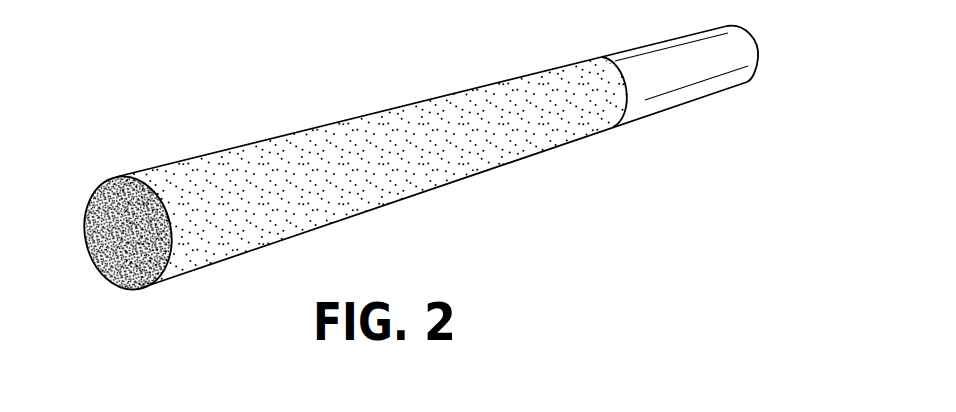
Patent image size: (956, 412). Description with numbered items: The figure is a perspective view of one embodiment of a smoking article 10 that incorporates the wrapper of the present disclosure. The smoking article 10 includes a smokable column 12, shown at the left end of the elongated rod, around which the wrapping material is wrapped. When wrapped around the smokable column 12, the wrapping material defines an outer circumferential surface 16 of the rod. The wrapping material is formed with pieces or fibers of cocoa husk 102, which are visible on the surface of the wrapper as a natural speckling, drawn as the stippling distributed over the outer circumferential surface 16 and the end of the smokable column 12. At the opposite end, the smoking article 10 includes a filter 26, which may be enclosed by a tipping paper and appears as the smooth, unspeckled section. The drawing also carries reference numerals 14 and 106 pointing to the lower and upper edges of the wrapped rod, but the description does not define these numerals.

The smoking article 10 is at (403, 175).
The smokable column 12 is at (104, 268).
The wrapper outer surface 14 is at (413, 198).
The outer circumferential surface 16 is at (350, 181).
The filter 26 is at (687, 94).
The pieces or fibers of cocoa husk 102 is at (423, 160).
The wrapper paper 106 is at (442, 98).